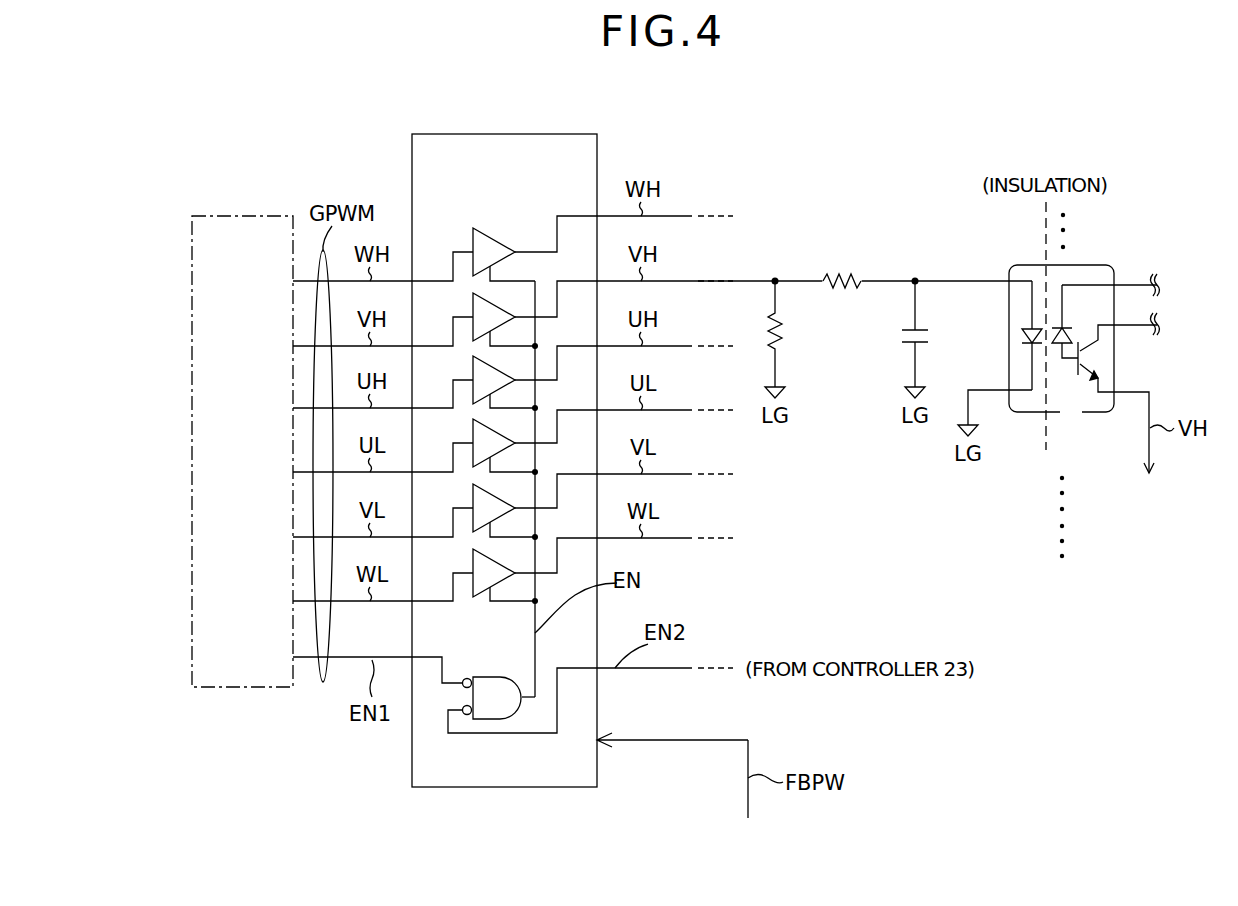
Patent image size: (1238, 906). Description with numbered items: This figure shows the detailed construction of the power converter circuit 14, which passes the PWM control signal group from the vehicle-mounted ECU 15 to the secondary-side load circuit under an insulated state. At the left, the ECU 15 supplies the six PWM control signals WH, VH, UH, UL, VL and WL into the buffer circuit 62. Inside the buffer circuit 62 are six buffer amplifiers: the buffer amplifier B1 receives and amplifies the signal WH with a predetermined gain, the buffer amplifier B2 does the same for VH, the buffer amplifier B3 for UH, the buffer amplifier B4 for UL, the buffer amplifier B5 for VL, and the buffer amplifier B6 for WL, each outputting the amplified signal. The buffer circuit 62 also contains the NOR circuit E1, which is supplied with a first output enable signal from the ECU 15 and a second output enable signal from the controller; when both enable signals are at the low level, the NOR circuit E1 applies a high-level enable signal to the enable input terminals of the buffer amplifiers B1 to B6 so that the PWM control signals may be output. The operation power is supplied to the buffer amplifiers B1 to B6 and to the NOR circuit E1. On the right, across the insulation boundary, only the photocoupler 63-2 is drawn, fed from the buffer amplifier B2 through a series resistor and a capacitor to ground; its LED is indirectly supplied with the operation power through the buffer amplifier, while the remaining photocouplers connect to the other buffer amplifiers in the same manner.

The power converter circuit 14 is at (823, 94).
The ECU 15 is at (240, 212).
The buffer circuit 62 is at (517, 134).
The photocoupler 63-2 is at (1100, 265).
The buffer amplifier B1 is at (473, 240).
The buffer amplifier B2 is at (473, 305).
The buffer amplifier B3 is at (473, 368).
The buffer amplifier B4 is at (473, 431).
The buffer amplifier B5 is at (473, 496).
The buffer amplifier B6 is at (473, 561).
The NOR circuit E1 is at (488, 676).